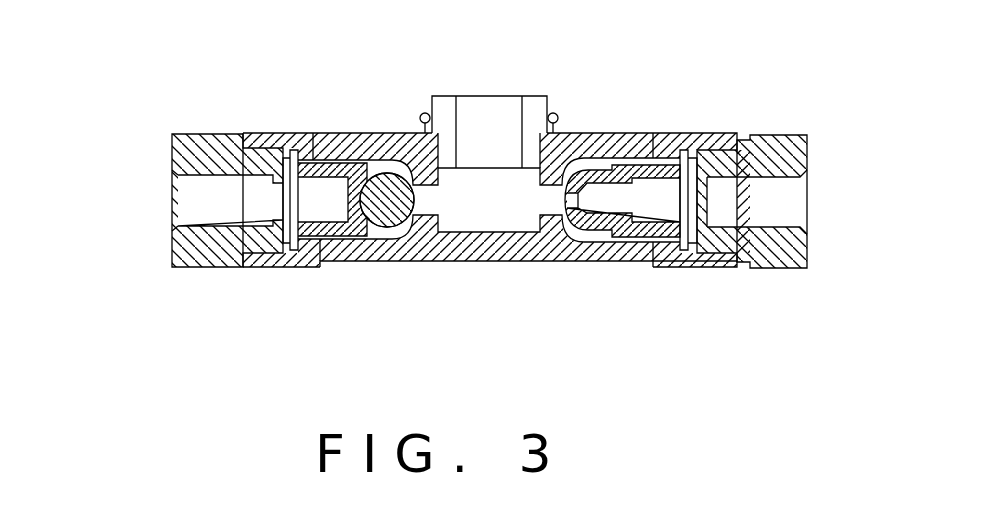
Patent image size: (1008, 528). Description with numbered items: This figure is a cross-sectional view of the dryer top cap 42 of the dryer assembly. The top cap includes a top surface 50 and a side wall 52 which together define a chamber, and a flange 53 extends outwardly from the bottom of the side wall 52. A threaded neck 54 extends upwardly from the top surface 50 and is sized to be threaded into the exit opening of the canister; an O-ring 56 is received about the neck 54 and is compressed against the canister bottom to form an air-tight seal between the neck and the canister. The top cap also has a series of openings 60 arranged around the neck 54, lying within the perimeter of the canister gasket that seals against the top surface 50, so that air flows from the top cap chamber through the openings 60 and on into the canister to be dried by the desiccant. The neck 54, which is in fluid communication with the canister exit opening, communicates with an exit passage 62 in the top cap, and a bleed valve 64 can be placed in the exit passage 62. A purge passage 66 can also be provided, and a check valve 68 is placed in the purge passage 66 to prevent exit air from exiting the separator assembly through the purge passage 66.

The dryer top cap 42 is at (140, 182).
The top surface 50 is at (584, 133).
The side wall 52 is at (649, 269).
The flange 53 is at (703, 270).
The threaded neck 54 is at (538, 95).
The O-ring 56 is at (422, 112).
The openings 60 is at (335, 150).
The exit passage 62 is at (776, 200).
The bleed valve 64 is at (661, 162).
The purge passage 66 is at (193, 198).
The check valve 68 is at (333, 230).